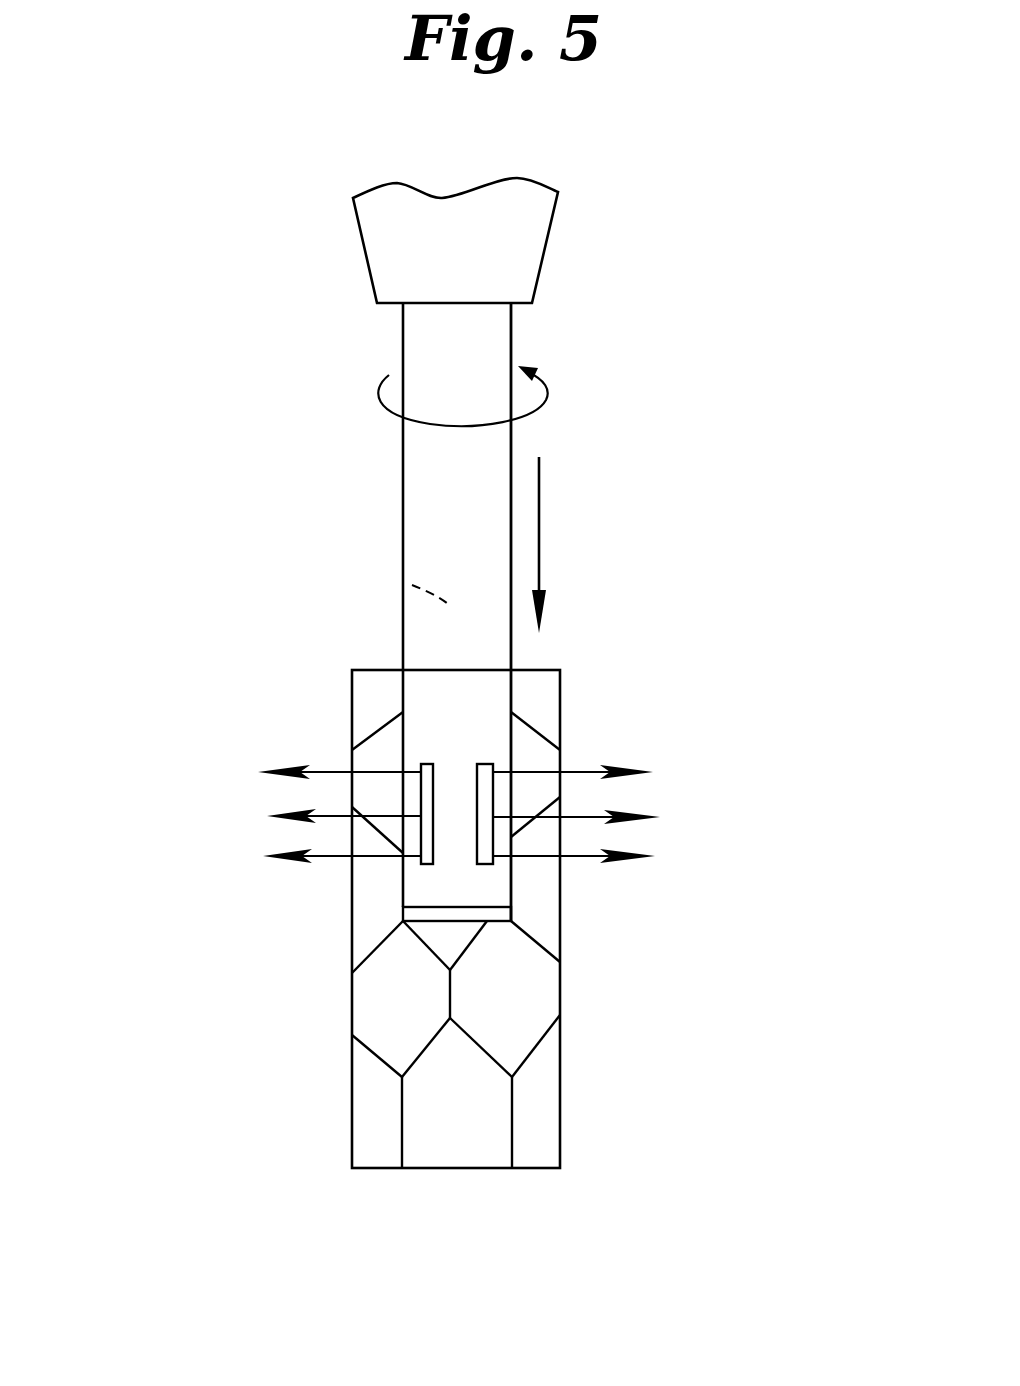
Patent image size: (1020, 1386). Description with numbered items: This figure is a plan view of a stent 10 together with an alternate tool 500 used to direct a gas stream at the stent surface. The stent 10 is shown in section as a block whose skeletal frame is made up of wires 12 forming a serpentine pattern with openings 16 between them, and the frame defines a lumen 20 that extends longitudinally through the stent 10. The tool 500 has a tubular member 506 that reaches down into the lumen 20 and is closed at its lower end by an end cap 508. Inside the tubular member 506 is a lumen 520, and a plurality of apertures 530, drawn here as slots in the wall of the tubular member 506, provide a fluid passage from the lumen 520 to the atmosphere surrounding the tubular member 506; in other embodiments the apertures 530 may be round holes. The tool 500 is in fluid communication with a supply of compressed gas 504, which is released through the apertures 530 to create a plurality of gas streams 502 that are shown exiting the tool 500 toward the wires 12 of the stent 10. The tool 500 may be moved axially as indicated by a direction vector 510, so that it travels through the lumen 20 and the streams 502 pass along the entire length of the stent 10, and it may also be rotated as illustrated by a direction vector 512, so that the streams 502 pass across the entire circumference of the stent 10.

The stent 10 is at (283, 1159).
The wires 12 is at (520, 1065).
The openings 16 is at (513, 1003).
The lumen 20 is at (463, 1142).
The tool 500 is at (343, 447).
The gas streams 502 is at (290, 815).
The compressed gas 504 is at (630, 775).
The tubular member 506 is at (428, 520).
The end cap 508 is at (451, 923).
The direction vector 510 is at (540, 548).
The direction vector 512 is at (547, 390).
The lumen 520 is at (405, 583).
The apertures 530 is at (430, 764).